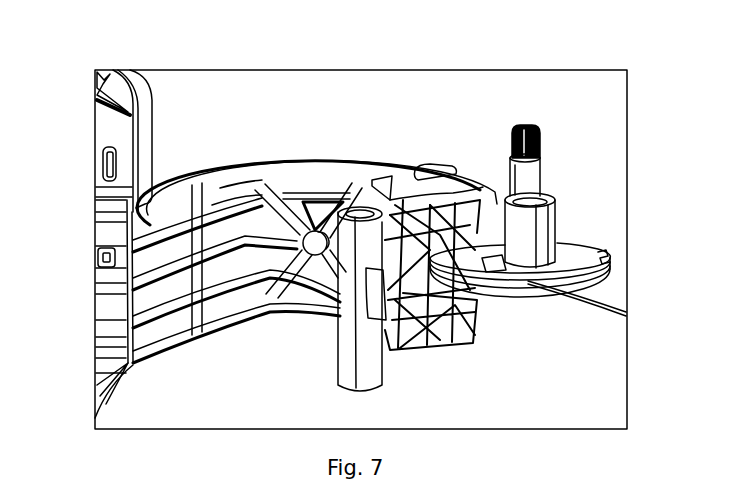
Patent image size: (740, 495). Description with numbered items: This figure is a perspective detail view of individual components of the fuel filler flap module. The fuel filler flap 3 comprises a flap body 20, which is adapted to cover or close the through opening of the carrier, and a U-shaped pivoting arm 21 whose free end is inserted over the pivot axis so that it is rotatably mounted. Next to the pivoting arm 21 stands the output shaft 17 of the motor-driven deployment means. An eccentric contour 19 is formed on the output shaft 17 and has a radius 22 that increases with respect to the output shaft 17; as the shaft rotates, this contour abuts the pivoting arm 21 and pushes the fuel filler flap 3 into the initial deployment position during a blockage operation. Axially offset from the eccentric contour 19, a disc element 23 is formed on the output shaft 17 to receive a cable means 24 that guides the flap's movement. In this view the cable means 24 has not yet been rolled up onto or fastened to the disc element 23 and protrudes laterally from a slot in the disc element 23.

The fuel filler flap 3 is at (230, 124).
The flap body 20 is at (104, 135).
The pivoting arm 21 is at (339, 162).
The output shaft 17 is at (540, 163).
The radius 22 is at (550, 197).
The eccentric contour 19 is at (562, 211).
The disc element 23 is at (509, 297).
The cable means 24 is at (612, 318).